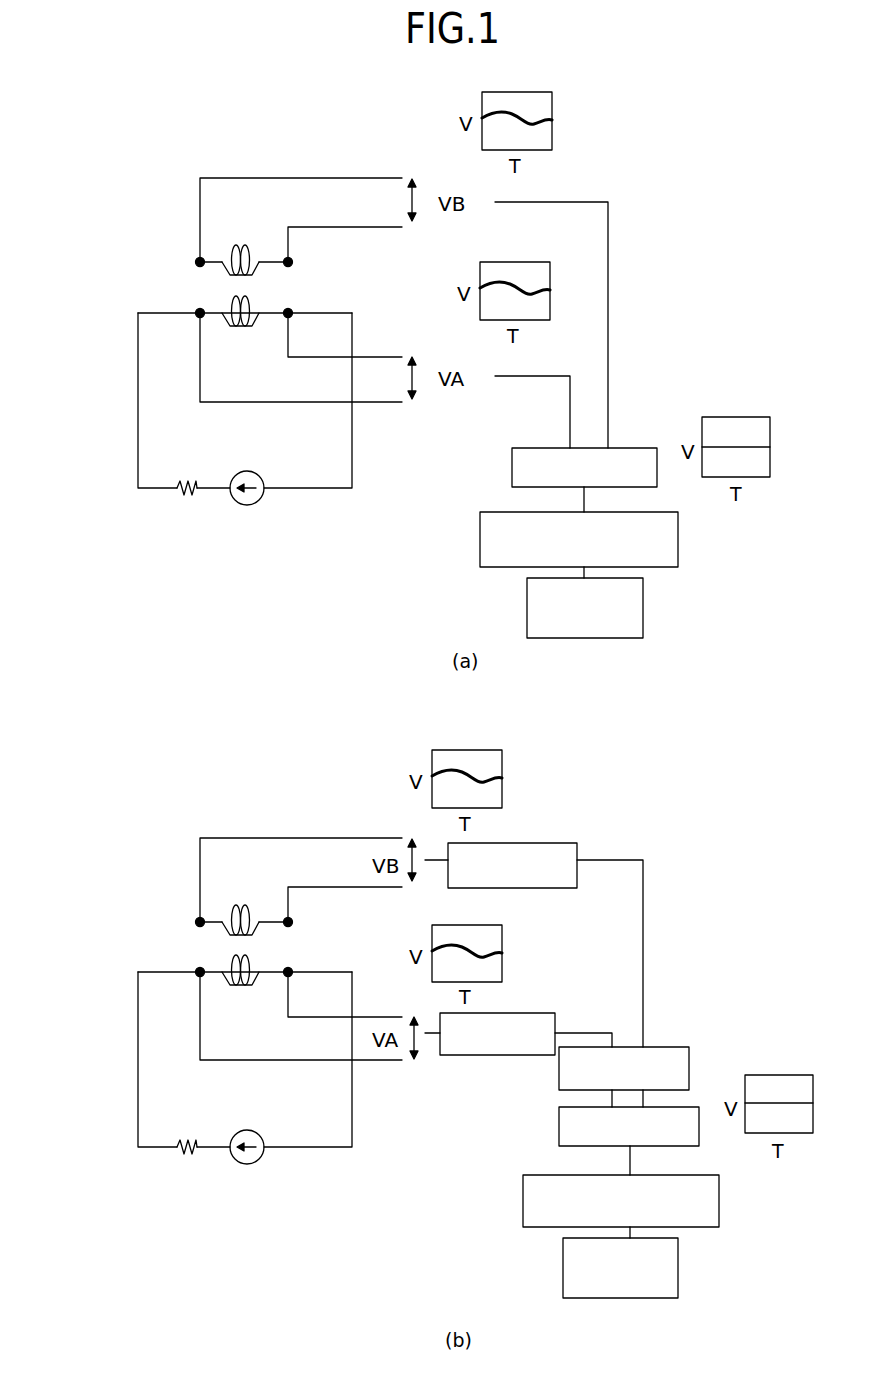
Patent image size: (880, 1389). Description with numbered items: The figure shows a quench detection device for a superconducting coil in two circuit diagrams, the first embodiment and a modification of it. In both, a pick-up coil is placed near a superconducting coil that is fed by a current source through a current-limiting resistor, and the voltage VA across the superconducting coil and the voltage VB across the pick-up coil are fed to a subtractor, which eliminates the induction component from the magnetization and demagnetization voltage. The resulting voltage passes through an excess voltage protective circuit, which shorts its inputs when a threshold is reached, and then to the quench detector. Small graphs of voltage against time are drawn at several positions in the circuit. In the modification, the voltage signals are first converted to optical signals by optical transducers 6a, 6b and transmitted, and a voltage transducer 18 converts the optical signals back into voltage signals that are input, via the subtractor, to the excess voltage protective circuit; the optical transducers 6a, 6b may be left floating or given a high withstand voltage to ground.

The optical transducer 6a is at (537, 1013).
The optical transducer 6b is at (528, 843).
The voltage transducer 18 is at (689, 1055).